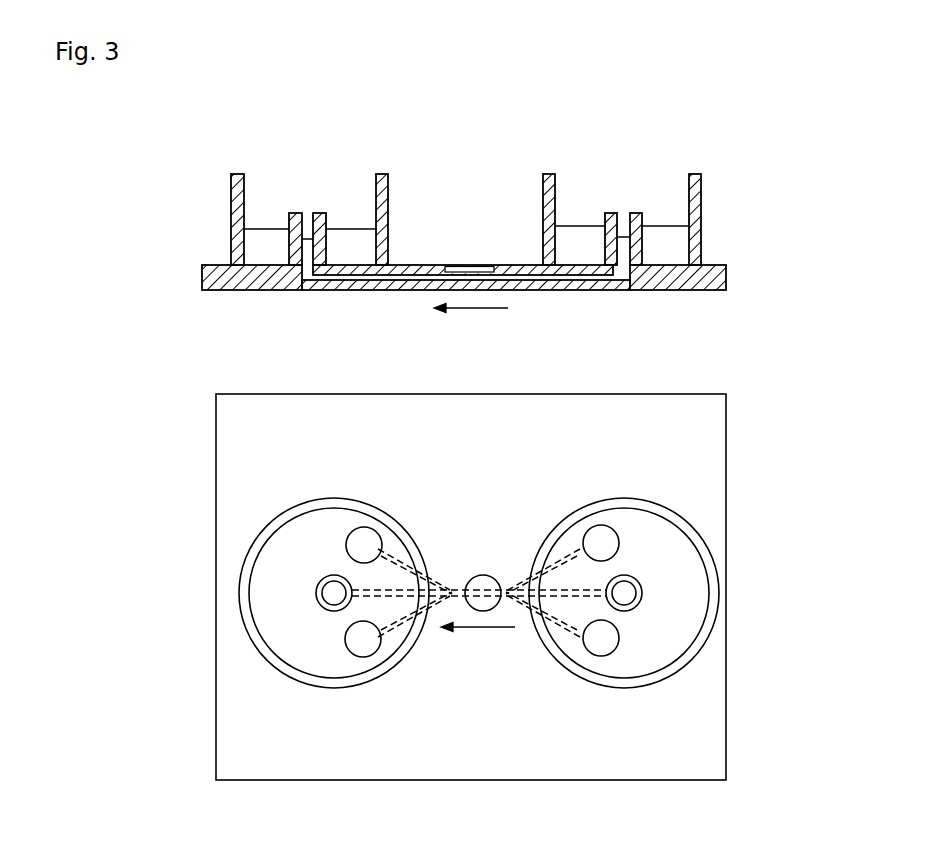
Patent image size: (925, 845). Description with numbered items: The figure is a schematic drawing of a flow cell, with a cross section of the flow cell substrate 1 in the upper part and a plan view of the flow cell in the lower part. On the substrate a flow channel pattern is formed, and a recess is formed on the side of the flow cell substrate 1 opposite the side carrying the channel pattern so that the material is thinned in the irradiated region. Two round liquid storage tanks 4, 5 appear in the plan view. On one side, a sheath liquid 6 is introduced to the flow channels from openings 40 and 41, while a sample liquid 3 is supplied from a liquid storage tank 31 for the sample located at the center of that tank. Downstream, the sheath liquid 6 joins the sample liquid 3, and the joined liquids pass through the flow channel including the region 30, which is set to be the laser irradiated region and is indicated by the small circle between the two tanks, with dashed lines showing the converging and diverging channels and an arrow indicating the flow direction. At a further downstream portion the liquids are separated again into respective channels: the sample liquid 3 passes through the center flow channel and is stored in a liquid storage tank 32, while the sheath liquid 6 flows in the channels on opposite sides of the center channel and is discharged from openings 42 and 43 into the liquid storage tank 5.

The flow cell substrate 1 is at (202, 268).
The sample liquid 3 is at (624, 593).
The liquid storage tank 4 is at (667, 513).
The liquid storage tank 5 is at (257, 537).
The sheath liquid 6 is at (635, 662).
The region 30 is at (483, 577).
The liquid storage tank for a sample 31 is at (642, 590).
The liquid storage tank 32 is at (316, 593).
The opening 40 is at (603, 526).
The opening 41 is at (592, 655).
The opening 42 is at (355, 652).
The opening 43 is at (365, 527).